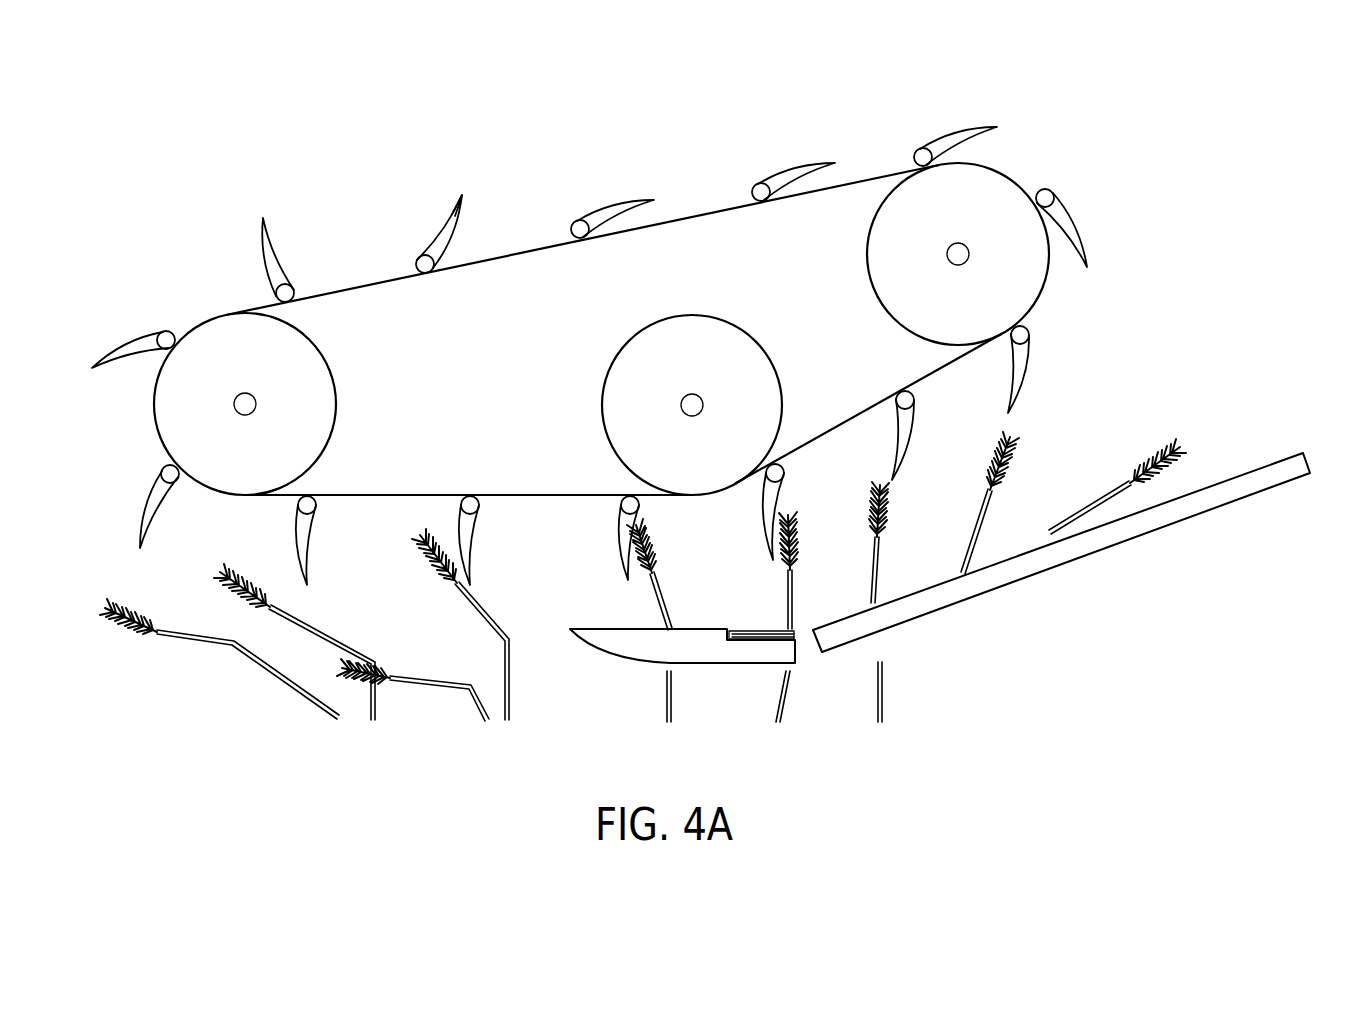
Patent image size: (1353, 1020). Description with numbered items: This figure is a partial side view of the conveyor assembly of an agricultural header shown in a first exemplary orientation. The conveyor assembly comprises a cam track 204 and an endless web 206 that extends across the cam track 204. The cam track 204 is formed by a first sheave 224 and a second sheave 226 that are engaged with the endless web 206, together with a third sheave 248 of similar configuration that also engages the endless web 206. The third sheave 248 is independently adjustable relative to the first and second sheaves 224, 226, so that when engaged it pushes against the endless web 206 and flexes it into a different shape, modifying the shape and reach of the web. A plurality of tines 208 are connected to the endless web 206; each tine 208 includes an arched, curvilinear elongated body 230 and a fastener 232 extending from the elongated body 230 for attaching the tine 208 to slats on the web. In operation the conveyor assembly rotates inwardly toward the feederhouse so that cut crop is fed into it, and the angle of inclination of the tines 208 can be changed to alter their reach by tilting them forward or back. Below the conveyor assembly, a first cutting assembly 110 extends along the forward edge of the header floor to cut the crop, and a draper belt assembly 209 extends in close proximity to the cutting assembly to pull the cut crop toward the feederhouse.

The first cutting assembly 110 is at (723, 653).
The cam track 204 is at (322, 272).
The endless web 206 is at (552, 240).
The tine 208 is at (434, 214).
The draper belt assembly 209 is at (930, 600).
The first sheave 224 is at (235, 352).
The second sheave 226 is at (985, 203).
The elongated body 230 is at (463, 193).
The fastener 232 is at (412, 260).
The third sheave 248 is at (687, 345).